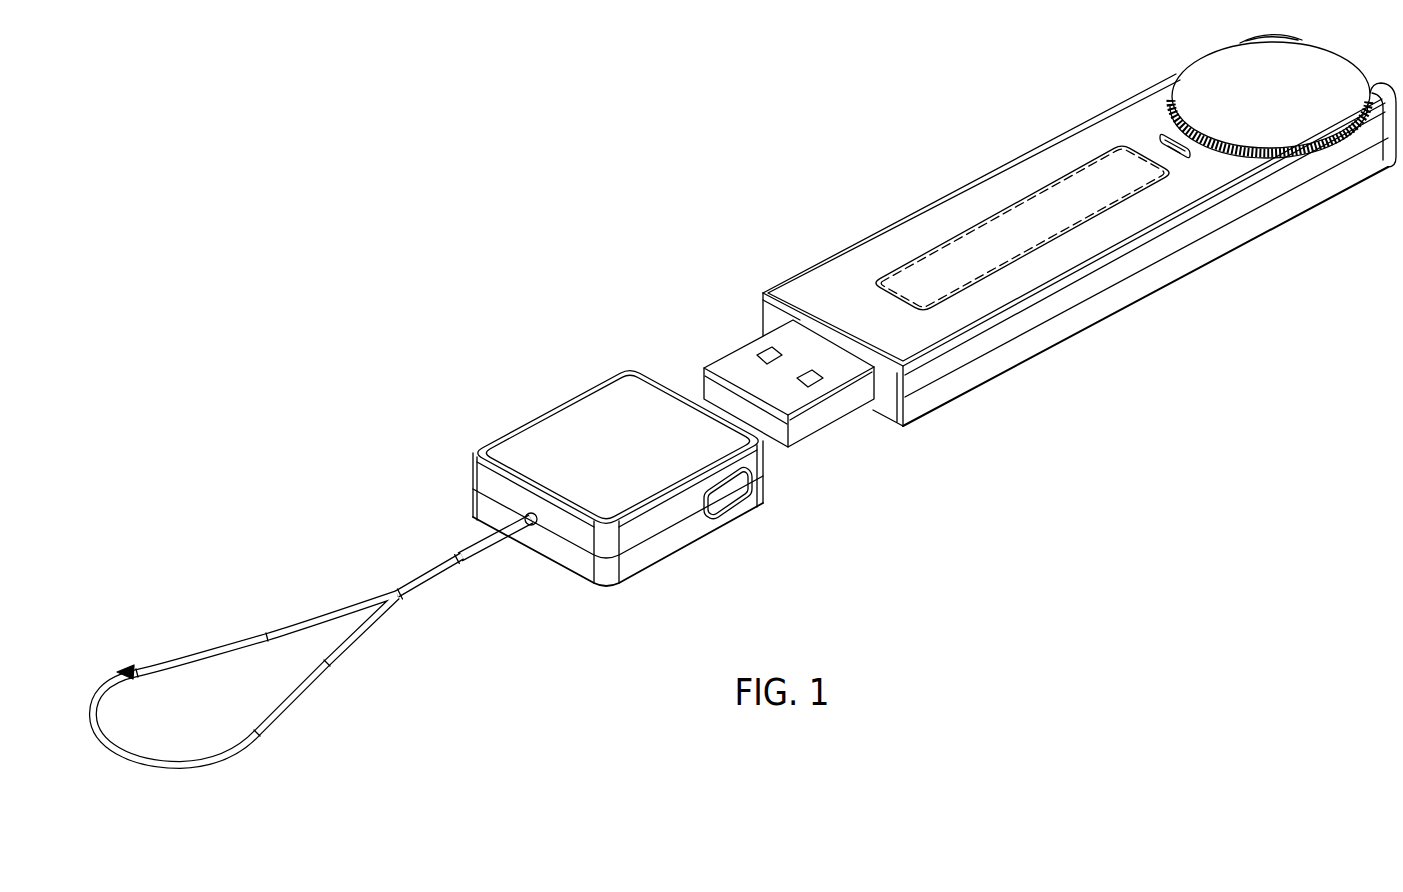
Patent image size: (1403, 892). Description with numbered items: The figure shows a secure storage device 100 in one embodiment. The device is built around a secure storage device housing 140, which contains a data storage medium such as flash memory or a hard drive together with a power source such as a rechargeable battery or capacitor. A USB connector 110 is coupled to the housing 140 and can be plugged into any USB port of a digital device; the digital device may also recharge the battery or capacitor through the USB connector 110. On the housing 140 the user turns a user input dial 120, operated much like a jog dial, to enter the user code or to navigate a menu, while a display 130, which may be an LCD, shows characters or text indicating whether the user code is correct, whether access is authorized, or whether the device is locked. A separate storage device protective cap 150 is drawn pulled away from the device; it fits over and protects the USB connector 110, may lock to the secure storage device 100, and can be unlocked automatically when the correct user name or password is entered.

The secure storage device 100 is at (850, 352).
The USB connector 110 is at (704, 366).
The user input dial 120 is at (1197, 45).
The display 130 is at (940, 240).
The secure storage device housing 140 is at (1084, 121).
The storage device protective cap 150 is at (556, 472).